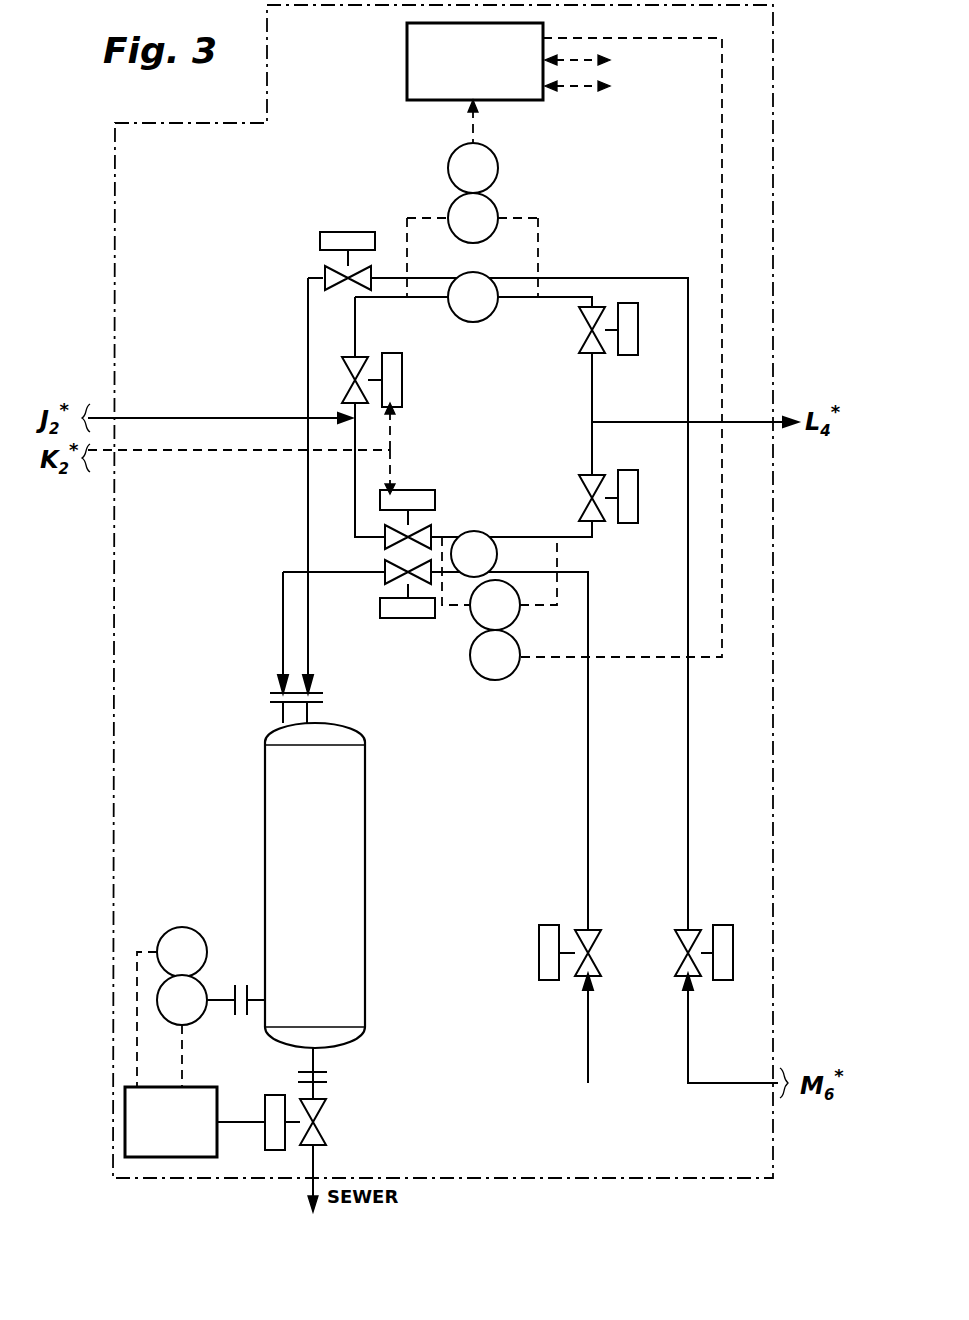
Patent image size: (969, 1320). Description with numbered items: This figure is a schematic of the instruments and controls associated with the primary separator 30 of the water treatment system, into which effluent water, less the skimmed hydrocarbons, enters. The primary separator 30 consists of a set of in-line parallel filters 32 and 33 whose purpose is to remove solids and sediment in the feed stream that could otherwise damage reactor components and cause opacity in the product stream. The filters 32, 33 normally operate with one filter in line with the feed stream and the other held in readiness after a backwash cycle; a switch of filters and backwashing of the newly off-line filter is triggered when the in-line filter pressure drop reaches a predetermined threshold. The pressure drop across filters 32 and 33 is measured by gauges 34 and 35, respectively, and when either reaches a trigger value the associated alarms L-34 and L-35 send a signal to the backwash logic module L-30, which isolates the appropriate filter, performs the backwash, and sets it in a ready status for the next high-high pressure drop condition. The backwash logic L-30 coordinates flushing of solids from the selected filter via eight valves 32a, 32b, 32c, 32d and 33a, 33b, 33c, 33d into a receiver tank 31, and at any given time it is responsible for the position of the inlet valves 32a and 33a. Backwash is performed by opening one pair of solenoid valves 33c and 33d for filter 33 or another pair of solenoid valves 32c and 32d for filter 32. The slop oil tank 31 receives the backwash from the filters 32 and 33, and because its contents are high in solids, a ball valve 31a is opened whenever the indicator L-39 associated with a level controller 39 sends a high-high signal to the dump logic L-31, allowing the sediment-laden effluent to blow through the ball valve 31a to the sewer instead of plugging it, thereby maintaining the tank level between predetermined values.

The primary separator 30 is at (110, 722).
The receiver tank 31 is at (365, 826).
The ball valve 31a is at (328, 1108).
The filter 32 is at (490, 316).
The inlet valve 32a is at (401, 392).
The valve 32b is at (628, 357).
The solenoid valve 32c is at (722, 922).
The solenoid valve 32d is at (332, 230).
The filter 33 is at (480, 530).
The inlet valve 33a is at (428, 488).
The valve 33b is at (632, 525).
The solenoid valve 33c is at (537, 925).
The solenoid valve 33d is at (383, 603).
The pressure drop gauge 34 is at (497, 210).
The pressure drop gauge 35 is at (520, 620).
The level controller 39 is at (205, 983).
The backwash logic module L-30 is at (406, 80).
The dump logic L-31 is at (207, 1087).
The alarm L-34 is at (498, 158).
The alarm L-35 is at (475, 670).
The indicator L-39 is at (200, 927).